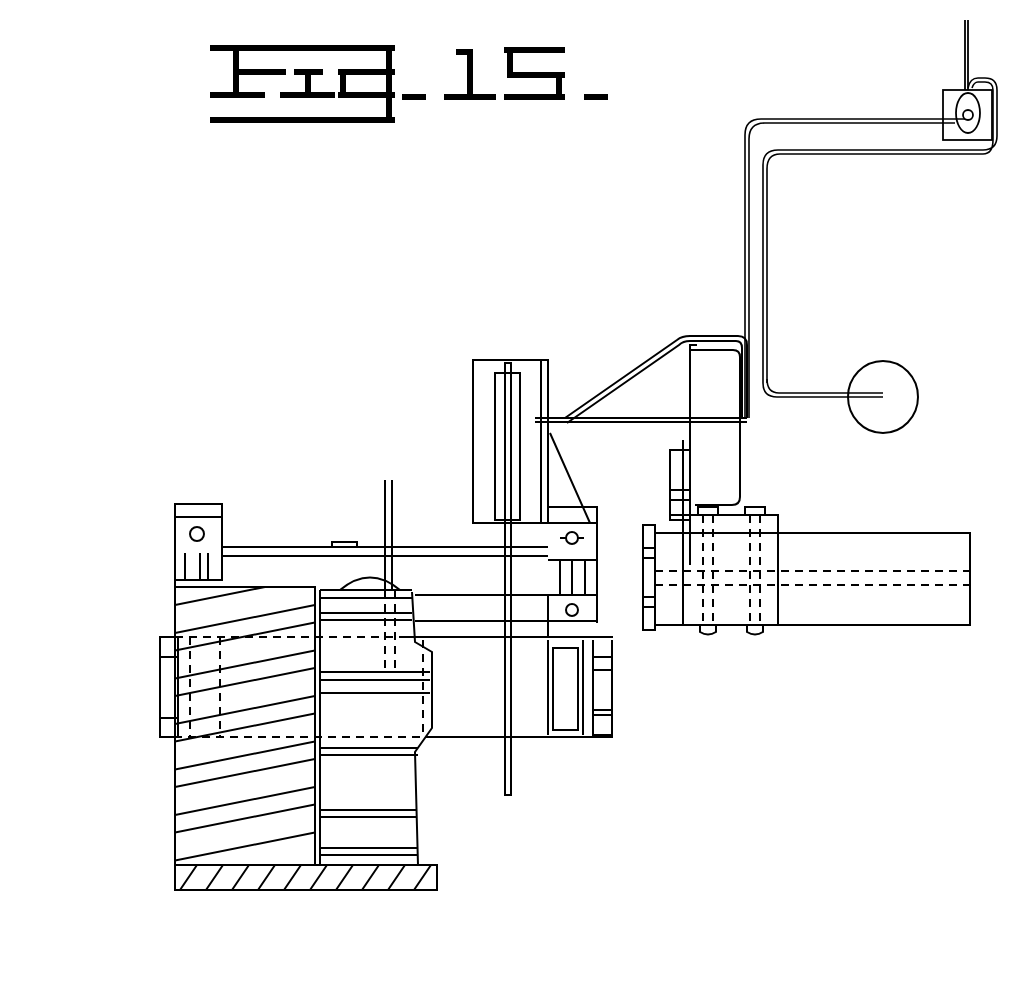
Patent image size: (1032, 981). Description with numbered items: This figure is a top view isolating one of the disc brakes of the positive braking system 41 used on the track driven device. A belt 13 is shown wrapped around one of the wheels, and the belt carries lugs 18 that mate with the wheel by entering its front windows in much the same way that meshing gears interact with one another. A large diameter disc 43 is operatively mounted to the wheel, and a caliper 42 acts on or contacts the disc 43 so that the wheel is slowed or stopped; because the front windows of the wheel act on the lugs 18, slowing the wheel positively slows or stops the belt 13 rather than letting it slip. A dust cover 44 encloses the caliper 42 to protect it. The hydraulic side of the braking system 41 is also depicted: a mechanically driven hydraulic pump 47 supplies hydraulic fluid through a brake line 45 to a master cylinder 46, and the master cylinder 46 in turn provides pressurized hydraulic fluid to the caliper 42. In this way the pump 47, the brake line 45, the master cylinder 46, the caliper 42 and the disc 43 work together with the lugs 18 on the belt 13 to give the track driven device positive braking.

The belt 13 is at (410, 890).
The lugs 18 is at (407, 780).
The braking system 41 is at (509, 370).
The caliper 42 is at (520, 390).
The disc 43 is at (513, 775).
The dust cover 44 is at (473, 505).
The brake line 45 is at (763, 232).
The master cylinder 46 is at (943, 107).
The hydraulic pump 47 is at (918, 397).